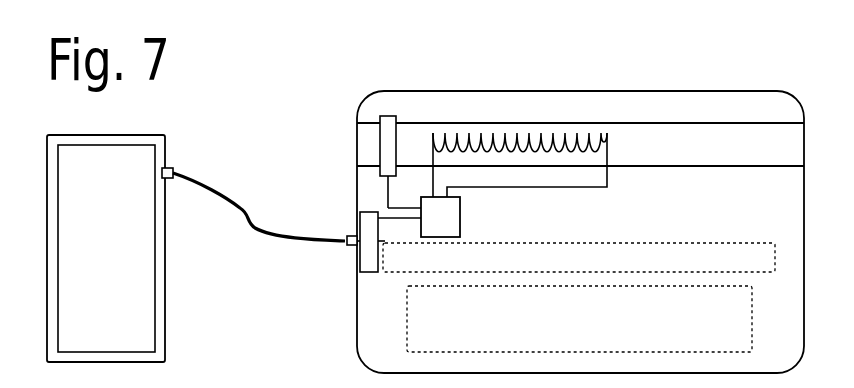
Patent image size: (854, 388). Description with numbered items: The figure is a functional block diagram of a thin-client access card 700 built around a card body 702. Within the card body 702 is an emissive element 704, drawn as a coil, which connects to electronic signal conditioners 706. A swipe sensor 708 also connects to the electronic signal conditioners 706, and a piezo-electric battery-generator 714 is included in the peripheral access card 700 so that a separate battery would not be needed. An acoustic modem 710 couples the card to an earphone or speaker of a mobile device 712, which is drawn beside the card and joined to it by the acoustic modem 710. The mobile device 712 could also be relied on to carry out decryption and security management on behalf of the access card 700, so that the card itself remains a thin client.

The access card 700 is at (297, 56).
The card body 702 is at (356, 297).
The emissive element 704 is at (608, 135).
The electronic signal conditioners 706 is at (460, 210).
The swipe sensor 708 is at (389, 115).
The acoustic modem 710 is at (259, 190).
The mobile device 712 is at (122, 287).
The piezo-electric battery-generator 714 is at (372, 273).